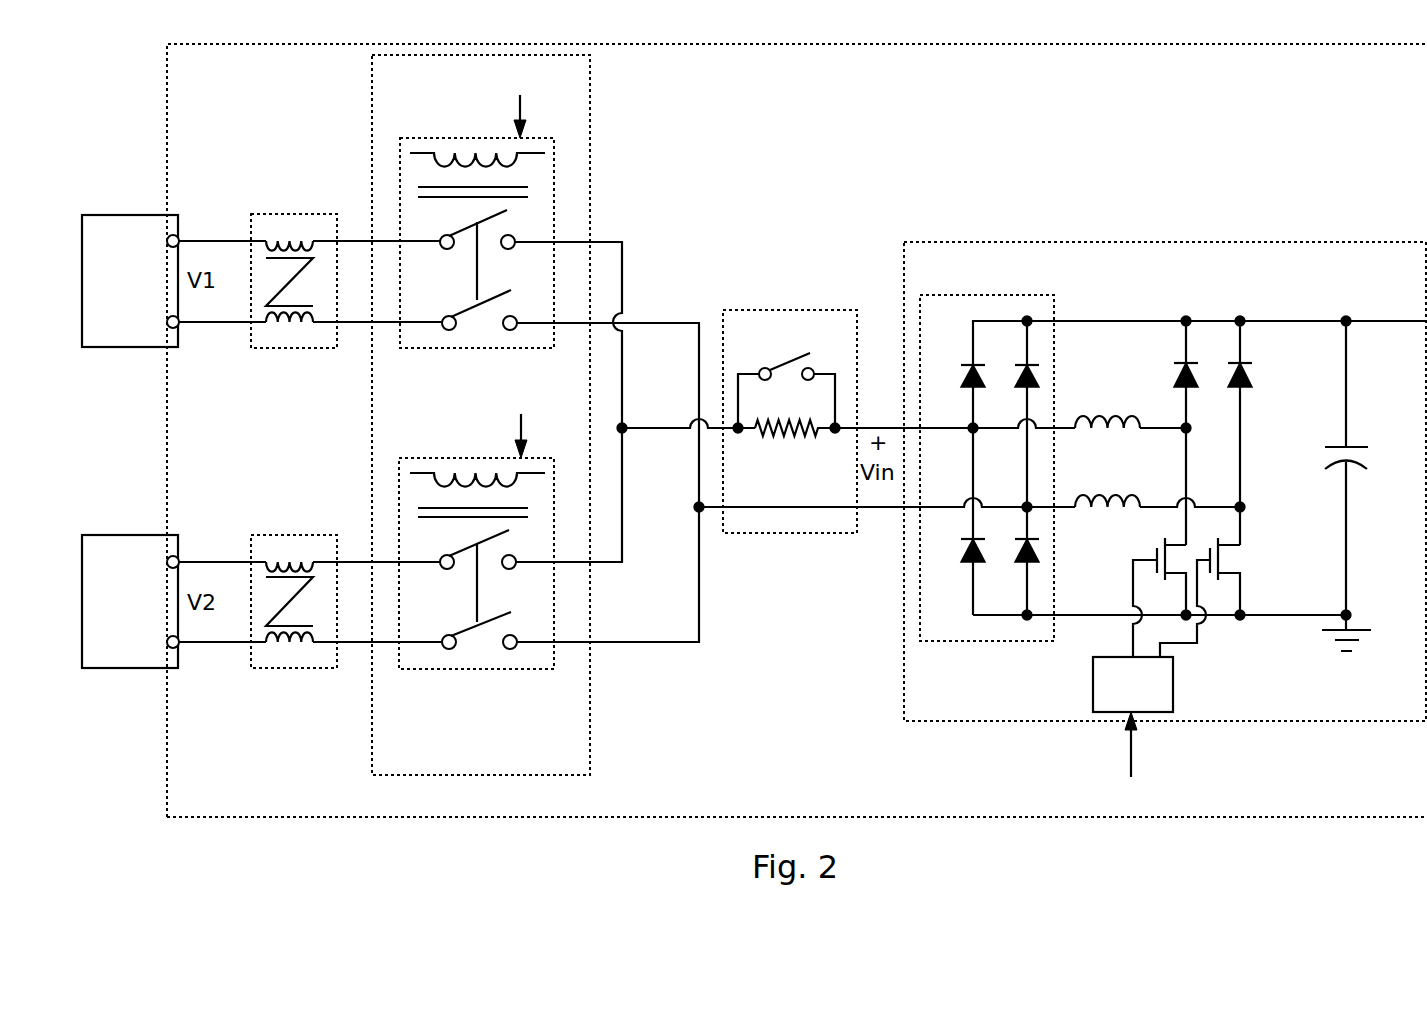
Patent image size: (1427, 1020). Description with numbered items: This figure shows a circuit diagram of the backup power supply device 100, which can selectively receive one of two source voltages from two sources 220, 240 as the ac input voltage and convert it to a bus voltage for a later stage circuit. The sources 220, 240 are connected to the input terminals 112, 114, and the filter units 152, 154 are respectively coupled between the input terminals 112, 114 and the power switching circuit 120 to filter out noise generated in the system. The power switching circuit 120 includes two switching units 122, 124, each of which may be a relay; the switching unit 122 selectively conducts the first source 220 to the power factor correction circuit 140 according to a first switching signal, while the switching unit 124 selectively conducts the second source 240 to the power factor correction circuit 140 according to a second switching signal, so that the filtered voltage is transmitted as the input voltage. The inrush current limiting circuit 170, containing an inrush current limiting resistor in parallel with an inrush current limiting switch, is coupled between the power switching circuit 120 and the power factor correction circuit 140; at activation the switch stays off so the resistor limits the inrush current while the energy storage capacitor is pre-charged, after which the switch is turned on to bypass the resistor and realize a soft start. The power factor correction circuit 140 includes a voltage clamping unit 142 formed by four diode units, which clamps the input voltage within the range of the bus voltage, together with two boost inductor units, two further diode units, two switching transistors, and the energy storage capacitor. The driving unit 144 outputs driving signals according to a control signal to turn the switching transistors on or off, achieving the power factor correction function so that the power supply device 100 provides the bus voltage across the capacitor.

The power supply device 100 is at (258, 817).
The input terminal 112 is at (184, 236).
The input terminal 114 is at (184, 556).
The power switching circuit 120 is at (590, 215).
The switching unit 122 is at (482, 348).
The switching unit 124 is at (440, 669).
The power factor correction circuit 140 is at (1100, 241).
The voltage clamping unit 142 is at (972, 641).
The driving unit 144 is at (1133, 684).
The filter unit 152 is at (280, 214).
The filter unit 154 is at (280, 535).
The inrush current limiting circuit 170 is at (790, 310).
The source 220 is at (130, 281).
The source 240 is at (130, 601).